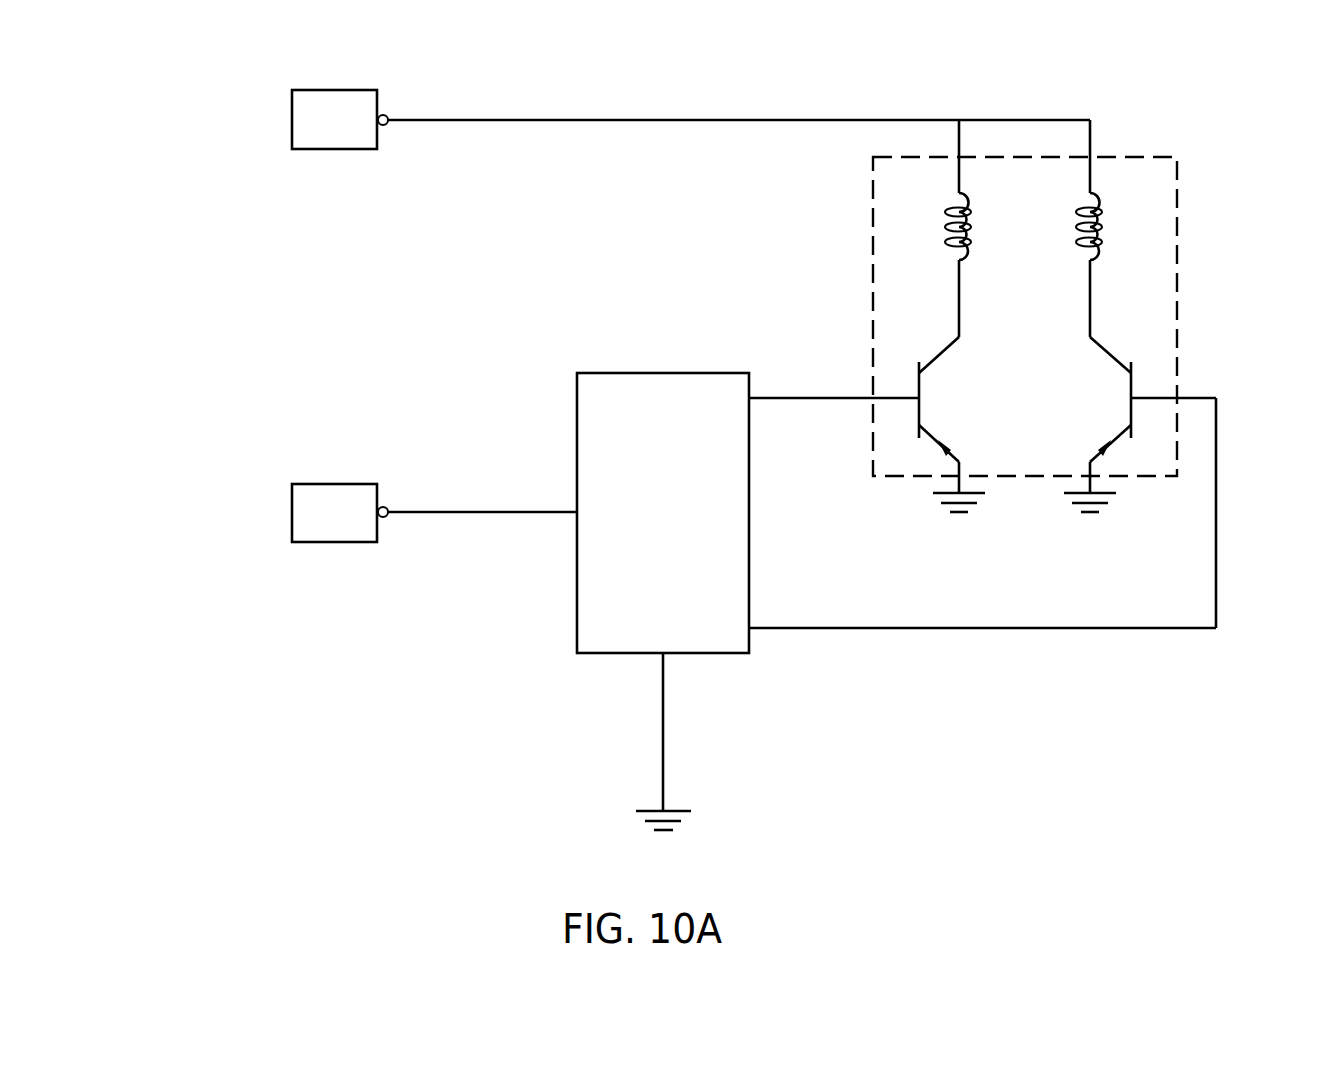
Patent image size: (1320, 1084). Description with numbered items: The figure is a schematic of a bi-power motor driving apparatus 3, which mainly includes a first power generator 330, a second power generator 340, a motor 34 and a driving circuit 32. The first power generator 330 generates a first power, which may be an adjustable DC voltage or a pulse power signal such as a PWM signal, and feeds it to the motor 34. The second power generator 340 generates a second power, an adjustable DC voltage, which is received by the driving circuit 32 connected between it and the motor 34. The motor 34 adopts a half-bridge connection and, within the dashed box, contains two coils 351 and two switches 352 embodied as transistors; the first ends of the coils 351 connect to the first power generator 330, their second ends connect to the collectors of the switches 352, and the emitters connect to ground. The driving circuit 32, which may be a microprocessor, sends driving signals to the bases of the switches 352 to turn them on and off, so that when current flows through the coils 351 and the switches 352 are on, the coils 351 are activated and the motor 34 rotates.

The bi-power motor driving apparatus 3 is at (933, 70).
The driving circuit 32 is at (703, 372).
The motor 34 is at (1117, 157).
The first power generator 330 is at (292, 120).
The second power generator 340 is at (292, 515).
The coil 351 is at (1107, 222).
The switch 352 is at (1133, 380).